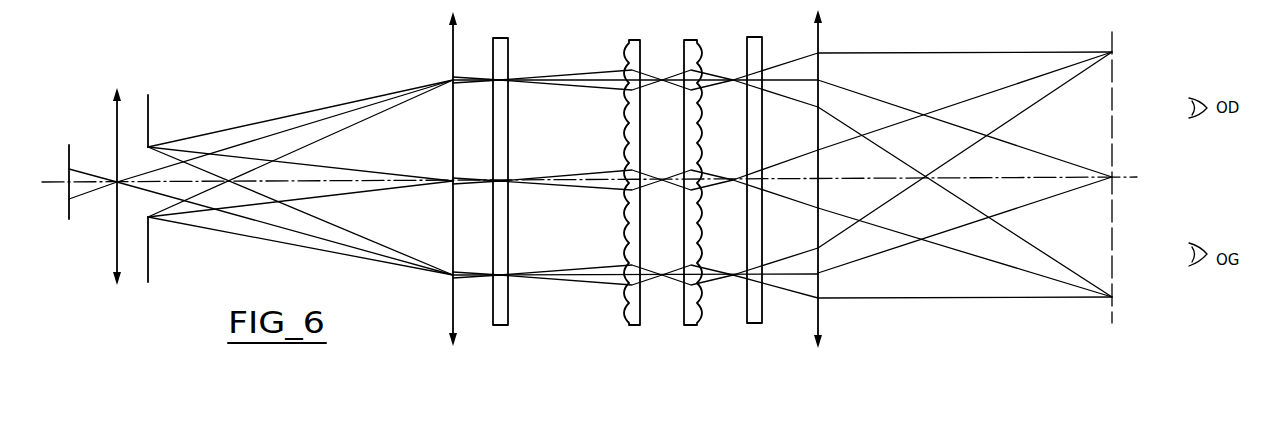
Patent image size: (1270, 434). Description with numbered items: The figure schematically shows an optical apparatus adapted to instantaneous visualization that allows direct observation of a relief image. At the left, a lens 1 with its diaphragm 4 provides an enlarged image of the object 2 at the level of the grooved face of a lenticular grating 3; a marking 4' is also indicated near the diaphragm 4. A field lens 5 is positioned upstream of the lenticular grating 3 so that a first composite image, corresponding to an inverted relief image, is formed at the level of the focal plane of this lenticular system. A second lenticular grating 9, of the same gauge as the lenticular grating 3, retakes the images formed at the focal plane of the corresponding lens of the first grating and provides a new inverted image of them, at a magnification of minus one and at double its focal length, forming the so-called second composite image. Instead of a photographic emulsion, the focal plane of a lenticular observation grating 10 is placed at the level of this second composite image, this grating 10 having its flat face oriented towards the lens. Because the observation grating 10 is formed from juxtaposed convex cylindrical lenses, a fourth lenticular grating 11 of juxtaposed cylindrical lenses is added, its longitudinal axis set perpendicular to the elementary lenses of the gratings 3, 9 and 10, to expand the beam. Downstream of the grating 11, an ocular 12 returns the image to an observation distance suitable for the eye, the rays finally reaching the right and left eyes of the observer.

The lens 1 is at (110, 122).
The object 2 is at (65, 142).
The lenticular grating 3 is at (503, 55).
The diaphragm 4 is at (165, 157).
The aperture diaphragm image 4' is at (141, 99).
The field lens 5 is at (453, 62).
The lenticular grating 9 is at (634, 46).
The lenticular observation grating 10 is at (690, 46).
The fourth lenticular grating 11 is at (755, 42).
The ocular 12 is at (820, 33).